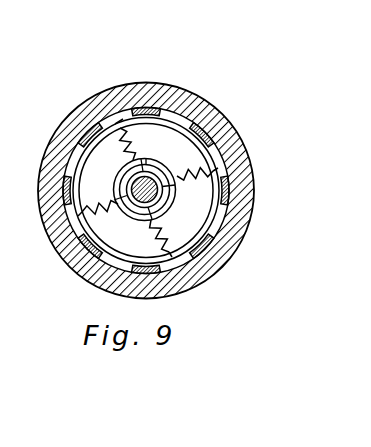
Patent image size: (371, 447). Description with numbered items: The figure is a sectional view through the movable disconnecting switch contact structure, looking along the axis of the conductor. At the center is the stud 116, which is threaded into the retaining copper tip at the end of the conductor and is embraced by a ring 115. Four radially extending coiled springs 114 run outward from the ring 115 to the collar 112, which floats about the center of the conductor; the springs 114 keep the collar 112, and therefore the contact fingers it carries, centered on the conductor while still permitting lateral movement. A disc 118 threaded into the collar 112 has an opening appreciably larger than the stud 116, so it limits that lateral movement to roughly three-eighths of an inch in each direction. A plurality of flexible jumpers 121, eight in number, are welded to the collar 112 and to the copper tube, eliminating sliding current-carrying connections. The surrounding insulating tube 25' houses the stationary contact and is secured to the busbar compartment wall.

The collar 112 is at (226, 123).
The disc 118 is at (185, 138).
The flexible jumpers 121 is at (240, 238).
The insulating tube 25' is at (161, 191).
The radially extending coiled springs 114 is at (131, 142).
The ring 115 is at (171, 195).
The stud 116 is at (140, 219).